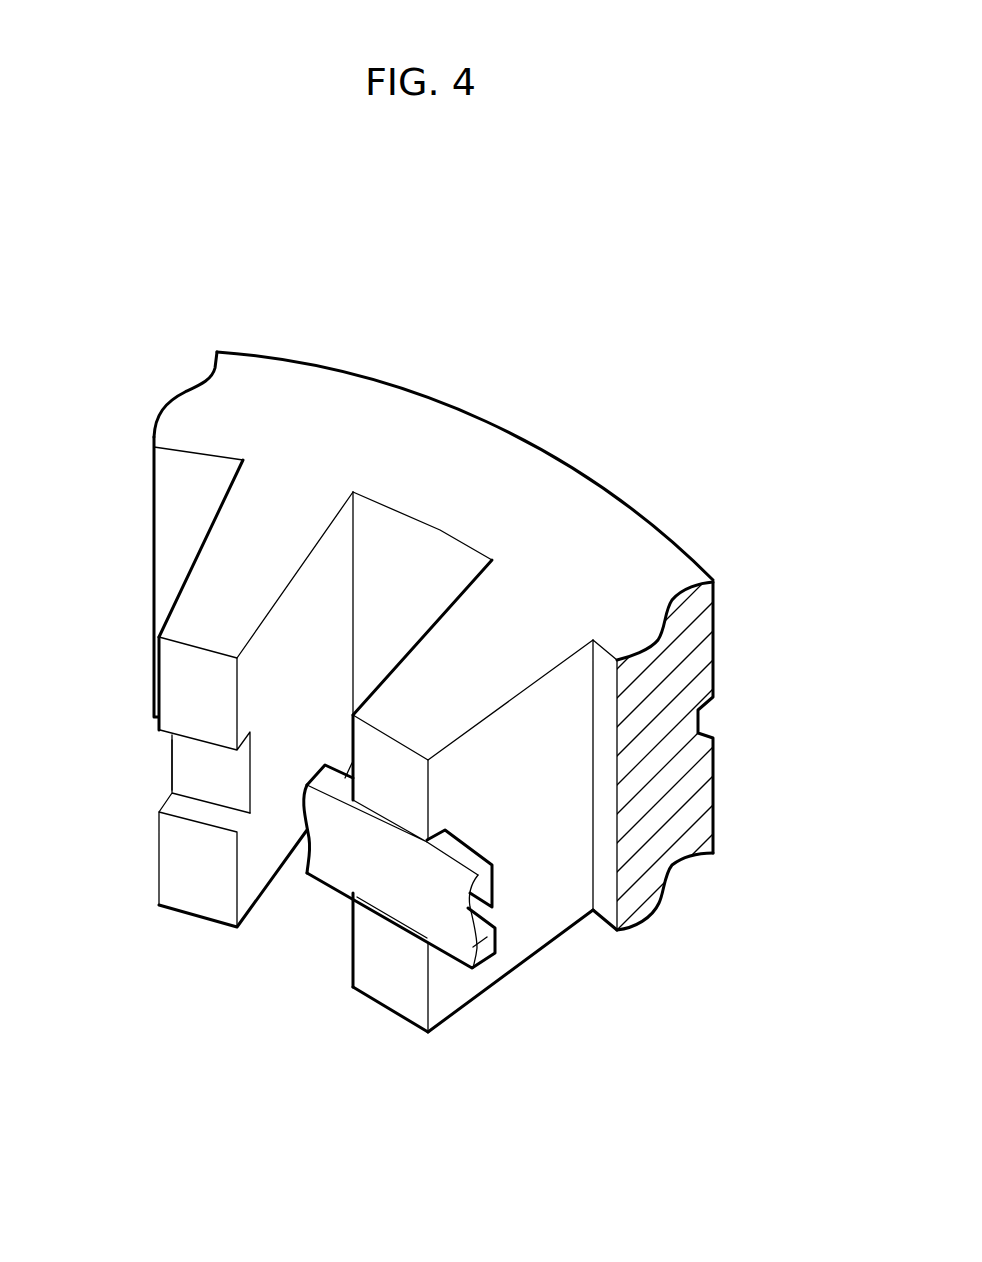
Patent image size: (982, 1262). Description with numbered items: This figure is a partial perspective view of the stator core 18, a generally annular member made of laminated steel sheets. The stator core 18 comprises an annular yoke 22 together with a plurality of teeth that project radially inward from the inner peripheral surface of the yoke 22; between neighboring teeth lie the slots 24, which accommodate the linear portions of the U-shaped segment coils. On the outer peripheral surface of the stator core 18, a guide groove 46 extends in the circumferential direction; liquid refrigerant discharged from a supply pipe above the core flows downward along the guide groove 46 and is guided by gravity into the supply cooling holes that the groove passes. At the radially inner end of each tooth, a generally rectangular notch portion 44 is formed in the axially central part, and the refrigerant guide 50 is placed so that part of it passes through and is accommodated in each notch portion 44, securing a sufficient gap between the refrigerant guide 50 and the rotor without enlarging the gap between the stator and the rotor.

The stator core 18 is at (332, 352).
The yoke 22 is at (505, 465).
The slots 24 is at (408, 580).
The notch portion 44 is at (203, 778).
The guide groove 46 is at (700, 718).
The refrigerant guide 50 is at (340, 860).